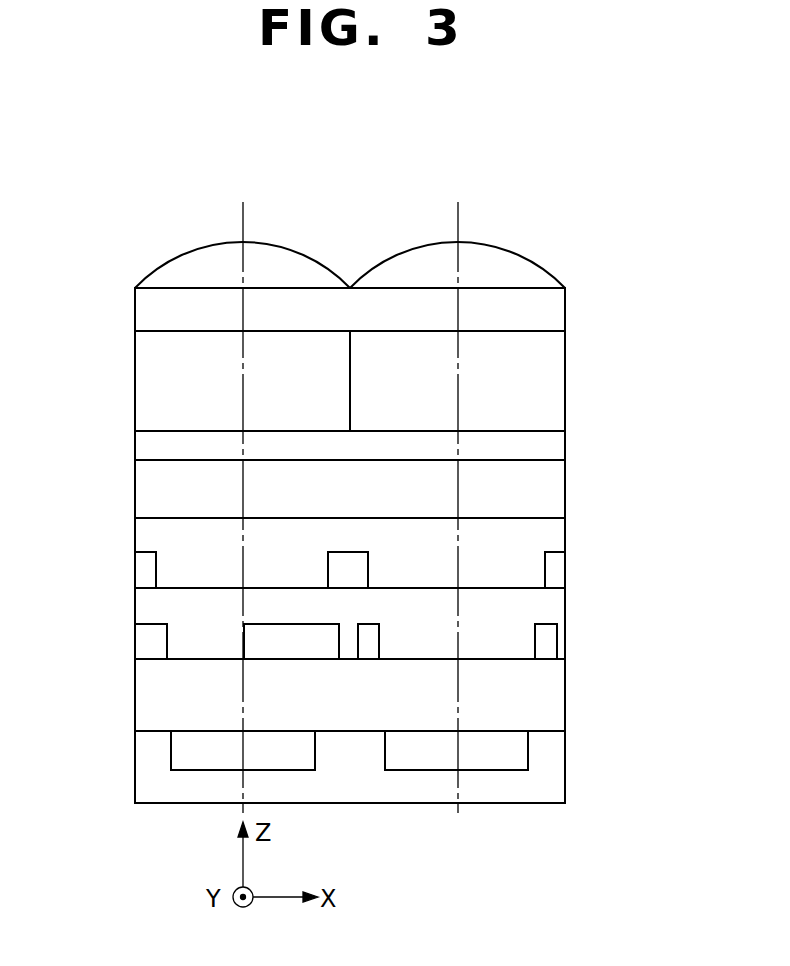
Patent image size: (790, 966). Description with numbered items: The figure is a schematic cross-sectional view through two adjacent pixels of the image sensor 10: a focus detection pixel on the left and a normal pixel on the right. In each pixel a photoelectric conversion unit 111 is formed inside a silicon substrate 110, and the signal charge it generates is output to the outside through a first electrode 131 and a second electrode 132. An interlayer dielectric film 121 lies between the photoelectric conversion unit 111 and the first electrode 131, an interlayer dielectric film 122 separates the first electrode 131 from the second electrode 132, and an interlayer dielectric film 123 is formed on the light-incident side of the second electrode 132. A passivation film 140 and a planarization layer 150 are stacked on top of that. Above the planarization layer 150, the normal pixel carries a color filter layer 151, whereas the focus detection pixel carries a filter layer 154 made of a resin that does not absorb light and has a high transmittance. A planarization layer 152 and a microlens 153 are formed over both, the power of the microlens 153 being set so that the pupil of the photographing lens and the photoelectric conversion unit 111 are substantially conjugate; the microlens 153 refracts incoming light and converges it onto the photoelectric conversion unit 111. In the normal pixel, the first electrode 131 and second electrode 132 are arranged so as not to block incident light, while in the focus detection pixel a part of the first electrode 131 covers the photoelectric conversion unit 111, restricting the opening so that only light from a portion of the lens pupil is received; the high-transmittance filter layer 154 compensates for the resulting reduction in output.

The image sensor 10 is at (532, 901).
The silicon substrate 110 is at (540, 786).
The photoelectric conversion unit 111 is at (505, 752).
The interlayer dielectric film 121 is at (540, 688).
The interlayer dielectric film 122 is at (540, 604).
The interlayer dielectric film 123 is at (540, 533).
The first electrode 131 is at (152, 641).
The second electrode 132 is at (555, 568).
The passivation film 140 is at (540, 491).
The planarization layer 150 is at (540, 443).
The color filter layer 151 is at (540, 368).
The planarization layer 152 is at (540, 307).
The microlens 153 is at (498, 265).
The filter layer 154 is at (160, 383).